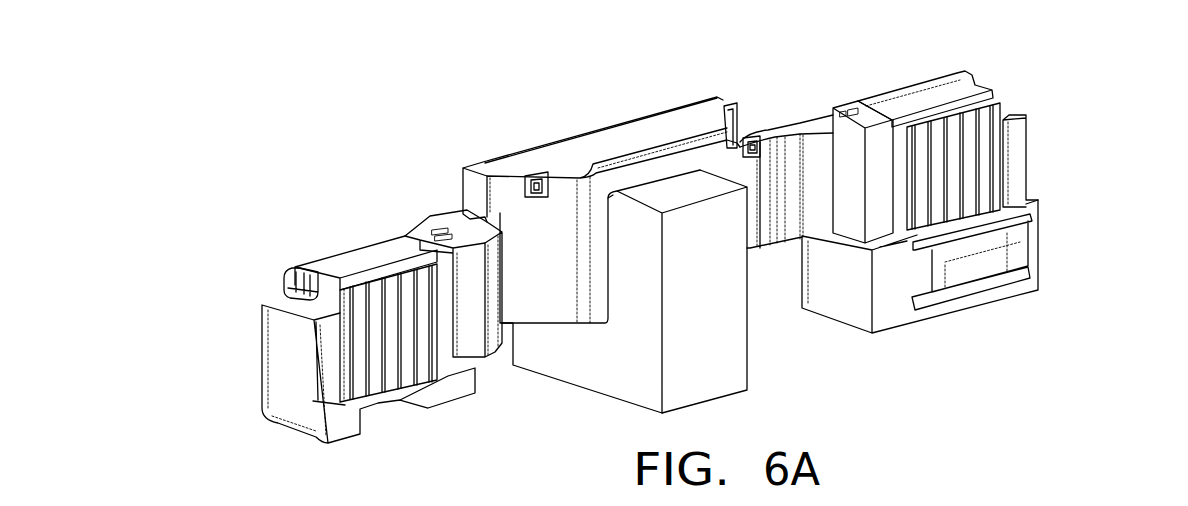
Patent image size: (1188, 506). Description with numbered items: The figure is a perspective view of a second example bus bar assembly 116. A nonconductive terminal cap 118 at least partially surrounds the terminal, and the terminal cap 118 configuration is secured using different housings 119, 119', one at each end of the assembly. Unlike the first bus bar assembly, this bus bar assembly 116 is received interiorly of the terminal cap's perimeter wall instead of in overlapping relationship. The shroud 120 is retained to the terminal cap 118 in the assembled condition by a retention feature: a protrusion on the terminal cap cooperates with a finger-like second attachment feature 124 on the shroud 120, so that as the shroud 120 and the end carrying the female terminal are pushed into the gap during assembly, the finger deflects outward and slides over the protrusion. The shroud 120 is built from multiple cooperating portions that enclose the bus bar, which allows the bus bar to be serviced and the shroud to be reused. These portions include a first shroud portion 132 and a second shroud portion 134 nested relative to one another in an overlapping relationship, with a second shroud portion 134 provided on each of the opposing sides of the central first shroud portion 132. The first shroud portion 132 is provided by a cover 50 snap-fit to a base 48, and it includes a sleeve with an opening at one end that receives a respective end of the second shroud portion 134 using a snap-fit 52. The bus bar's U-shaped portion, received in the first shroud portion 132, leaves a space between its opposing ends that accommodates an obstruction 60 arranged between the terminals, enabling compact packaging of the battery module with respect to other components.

The base 48 is at (550, 302).
The cover 50 is at (583, 145).
The snap-fit 52 is at (530, 182).
The obstruction 60 is at (730, 312).
The bus bar assembly 116 is at (1030, 108).
The terminal cap 118 is at (340, 353).
The housing 119 is at (310, 384).
The housing 119' is at (956, 281).
The shroud 120 is at (787, 115).
The second attachment feature 124 is at (304, 270).
The first shroud portion 132 is at (642, 112).
The second shroud portion 134 is at (368, 255).